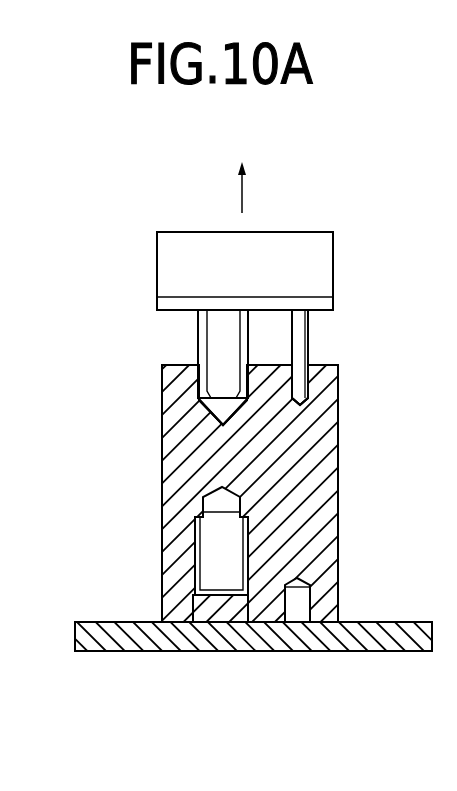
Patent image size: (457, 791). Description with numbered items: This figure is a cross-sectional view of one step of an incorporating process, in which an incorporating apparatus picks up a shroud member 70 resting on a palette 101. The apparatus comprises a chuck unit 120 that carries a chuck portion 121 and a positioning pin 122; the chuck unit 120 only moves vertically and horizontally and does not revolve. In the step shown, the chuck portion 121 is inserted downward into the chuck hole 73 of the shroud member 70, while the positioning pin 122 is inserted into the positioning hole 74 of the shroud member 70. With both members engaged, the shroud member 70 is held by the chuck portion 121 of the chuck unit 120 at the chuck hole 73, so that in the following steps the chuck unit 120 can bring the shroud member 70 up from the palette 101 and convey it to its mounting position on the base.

The chuck unit 120 is at (143, 255).
The chuck portion 121 is at (198, 330).
The positioning pin 122 is at (308, 327).
The shroud member 70 is at (338, 480).
The chuck hole 73 is at (215, 380).
The positioning hole 74 is at (305, 380).
The palette 101 is at (347, 653).